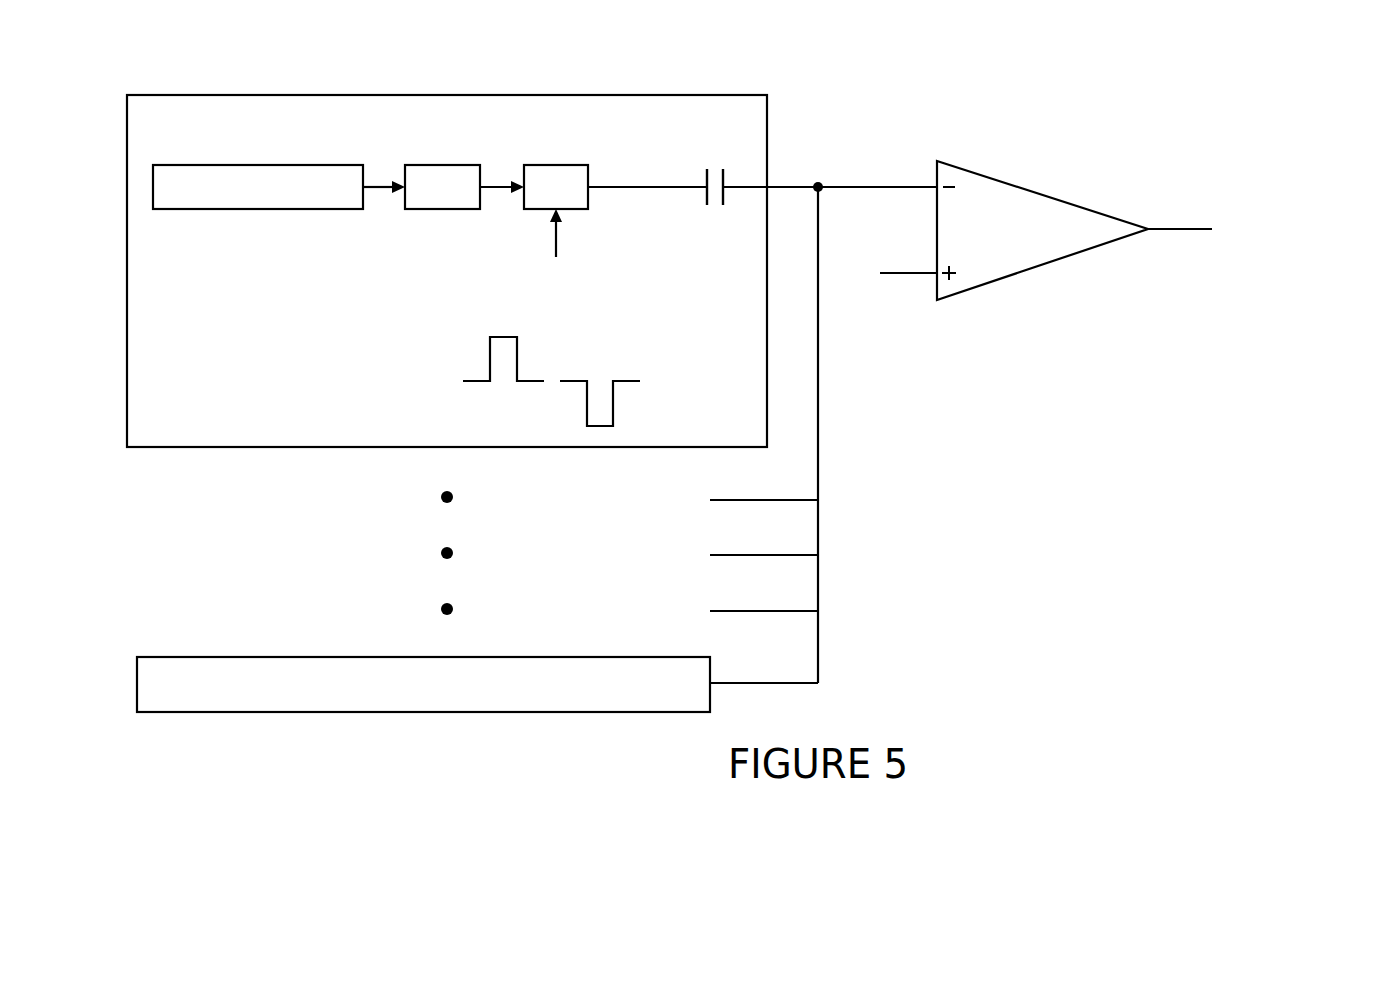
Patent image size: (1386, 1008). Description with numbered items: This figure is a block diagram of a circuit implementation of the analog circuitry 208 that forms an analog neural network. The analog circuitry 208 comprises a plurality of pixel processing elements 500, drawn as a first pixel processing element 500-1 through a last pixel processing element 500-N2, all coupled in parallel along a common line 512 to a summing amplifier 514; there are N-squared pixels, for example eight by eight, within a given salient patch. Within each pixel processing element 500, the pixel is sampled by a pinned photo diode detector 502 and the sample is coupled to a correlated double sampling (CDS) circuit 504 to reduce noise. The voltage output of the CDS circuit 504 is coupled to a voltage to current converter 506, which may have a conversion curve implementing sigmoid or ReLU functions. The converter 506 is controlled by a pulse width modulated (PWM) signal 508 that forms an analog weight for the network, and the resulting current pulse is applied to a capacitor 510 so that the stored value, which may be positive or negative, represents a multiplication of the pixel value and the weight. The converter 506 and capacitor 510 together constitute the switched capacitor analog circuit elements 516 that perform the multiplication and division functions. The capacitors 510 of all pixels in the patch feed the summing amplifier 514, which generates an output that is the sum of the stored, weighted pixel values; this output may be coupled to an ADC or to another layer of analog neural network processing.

The pixel processing element 500-1 is at (279, 95).
The pixel processing element 500-N2 is at (290, 657).
The pixel processing elements 500 is at (860, 483).
The pinned photo diode detector 502 is at (335, 210).
The correlated double sampling (CDS) circuit 504 is at (452, 210).
The voltage to current converter 506 is at (556, 165).
The pulse width modulated (PWM) signal 508 is at (523, 359).
The capacitor 510 is at (715, 211).
The summing bus line 512 is at (820, 412).
The summing amplifier 514 is at (1045, 268).
The analog circuit elements 516 is at (725, 85).
The analog circuitry 208 is at (1108, 428).